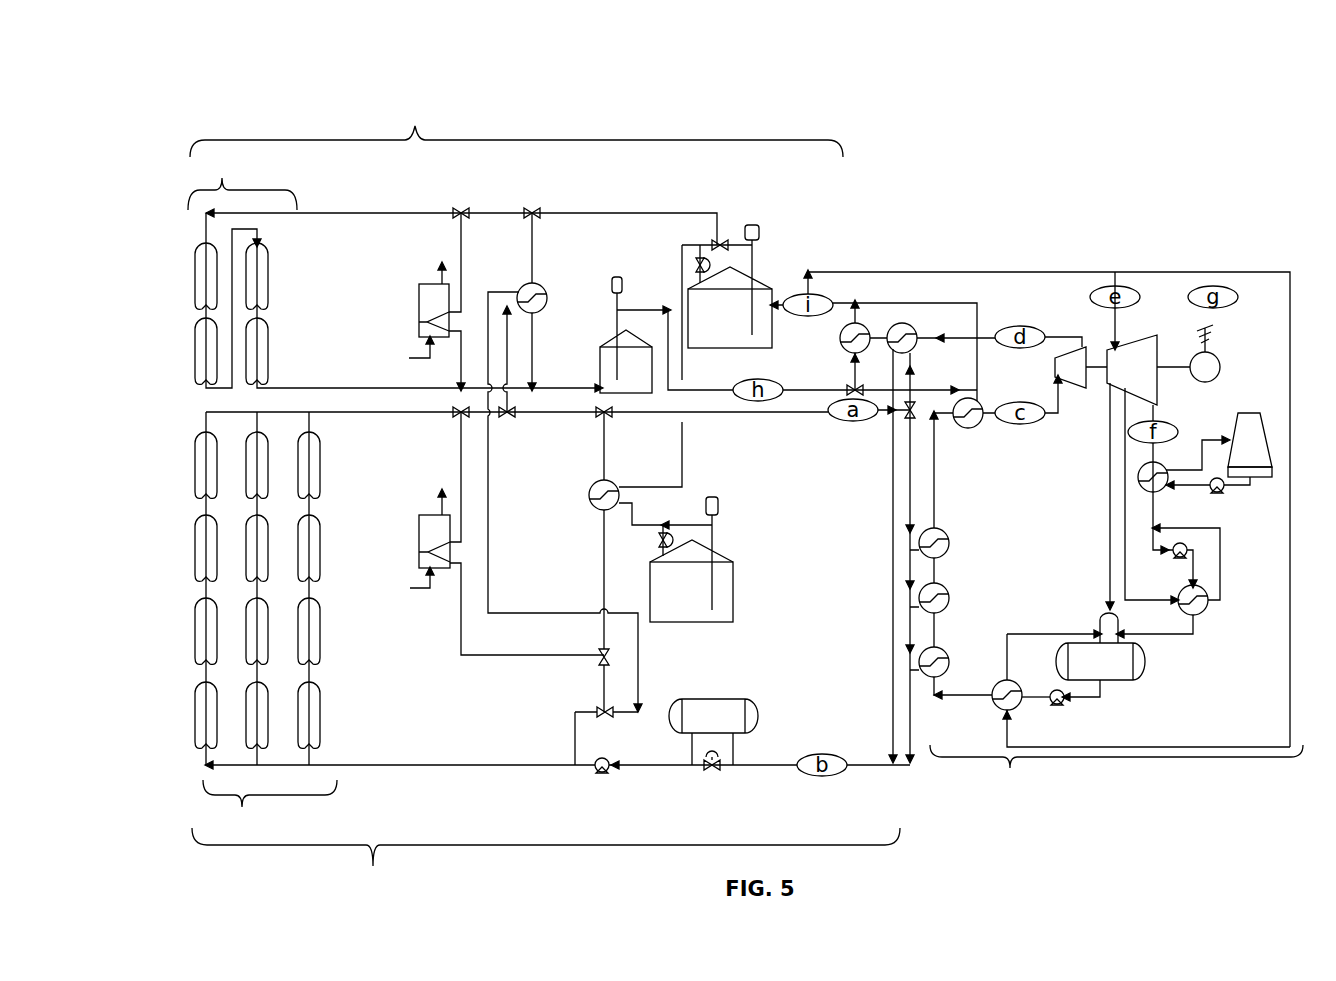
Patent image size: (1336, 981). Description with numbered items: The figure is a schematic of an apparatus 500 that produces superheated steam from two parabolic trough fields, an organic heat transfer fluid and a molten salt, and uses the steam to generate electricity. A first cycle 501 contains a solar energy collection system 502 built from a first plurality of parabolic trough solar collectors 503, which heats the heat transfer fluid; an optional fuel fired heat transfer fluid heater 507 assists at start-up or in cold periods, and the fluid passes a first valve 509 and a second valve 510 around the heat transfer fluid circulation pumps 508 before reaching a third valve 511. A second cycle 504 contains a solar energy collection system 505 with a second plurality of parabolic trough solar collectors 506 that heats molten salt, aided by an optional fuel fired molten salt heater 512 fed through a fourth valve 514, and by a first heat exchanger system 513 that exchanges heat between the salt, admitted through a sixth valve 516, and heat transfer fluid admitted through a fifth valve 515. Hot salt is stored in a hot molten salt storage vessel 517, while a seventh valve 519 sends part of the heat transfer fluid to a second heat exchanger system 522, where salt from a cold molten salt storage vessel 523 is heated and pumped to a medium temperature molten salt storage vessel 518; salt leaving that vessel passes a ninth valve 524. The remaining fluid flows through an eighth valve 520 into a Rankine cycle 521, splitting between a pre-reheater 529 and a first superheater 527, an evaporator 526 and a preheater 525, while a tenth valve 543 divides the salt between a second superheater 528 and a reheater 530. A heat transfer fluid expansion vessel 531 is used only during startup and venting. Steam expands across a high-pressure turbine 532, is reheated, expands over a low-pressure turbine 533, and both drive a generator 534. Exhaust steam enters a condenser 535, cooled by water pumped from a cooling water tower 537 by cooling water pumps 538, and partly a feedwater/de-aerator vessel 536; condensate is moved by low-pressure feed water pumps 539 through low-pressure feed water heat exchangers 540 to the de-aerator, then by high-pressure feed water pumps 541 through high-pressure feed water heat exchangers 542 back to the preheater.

The apparatus 500 is at (255, 95).
The first cycle 501 is at (546, 863).
The solar energy collection system 502 is at (270, 809).
The first plurality of parabolic trough solar collectors 503 is at (322, 458).
The second cycle 504 is at (516, 127).
The solar energy collection system 505 is at (242, 179).
The second plurality of parabolic trough solar collectors 506 is at (268, 262).
The fuel fired heat transfer fluid heater 507 is at (418, 540).
The heat transfer fluid circulation pumps 508 is at (605, 775).
The first valve 509 is at (597, 712).
The second valve 510 is at (598, 660).
The third valve 511 is at (458, 416).
The fuel fired molten salt heater 512 is at (419, 312).
The first heat exchanger system 513 is at (546, 294).
The fourth valve 514 is at (461, 208).
The fifth valve 515 is at (509, 418).
The sixth valve 516 is at (532, 208).
The hot molten salt storage vessel 517 is at (598, 372).
The medium temperature molten salt storage vessel 518 is at (770, 350).
The seventh valve 519 is at (607, 418).
The eighth valve 520 is at (916, 408).
The Rankine cycle 521 is at (1116, 771).
The second heat exchanger system 522 is at (589, 497).
The cold molten salt storage vessel 523 is at (668, 626).
The ninth valve 524 is at (714, 242).
The preheater 525 is at (947, 652).
The evaporator 526 is at (947, 590).
The first superheater 527 is at (947, 533).
The second superheater 528 is at (970, 430).
The pre-reheater 529 is at (915, 331).
The reheater 530 is at (866, 326).
The heat transfer fluid expansion vessel 531 is at (760, 715).
The high-pressure turbine 532 is at (1068, 385).
The low-pressure turbine 533 is at (1133, 345).
The generator 534 is at (1220, 363).
The condenser 535 is at (1158, 492).
The feedwater/de-aerator vessel 536 is at (1147, 665).
The cooling water tower 537 is at (1232, 435).
The cooling water pumps 538 is at (1222, 493).
The low-pressure feed water pumps 539 is at (1178, 558).
The low-pressure feed water heat exchangers 540 is at (1203, 615).
The high-pressure feed water pumps 541 is at (1060, 706).
The high-pressure feed water heat exchangers 542 is at (992, 703).
The tenth valve 543 is at (852, 385).